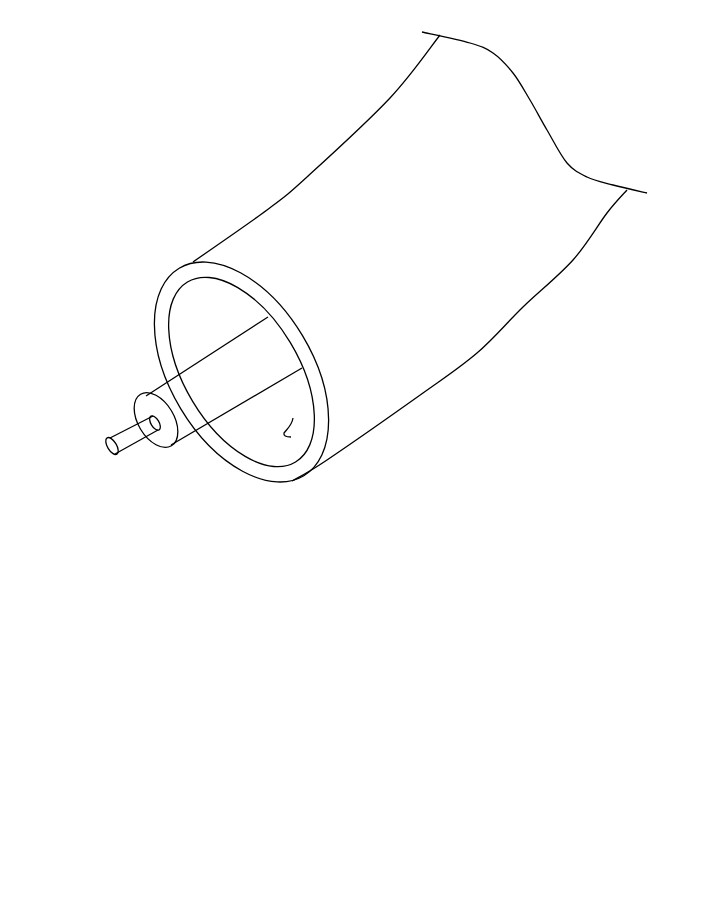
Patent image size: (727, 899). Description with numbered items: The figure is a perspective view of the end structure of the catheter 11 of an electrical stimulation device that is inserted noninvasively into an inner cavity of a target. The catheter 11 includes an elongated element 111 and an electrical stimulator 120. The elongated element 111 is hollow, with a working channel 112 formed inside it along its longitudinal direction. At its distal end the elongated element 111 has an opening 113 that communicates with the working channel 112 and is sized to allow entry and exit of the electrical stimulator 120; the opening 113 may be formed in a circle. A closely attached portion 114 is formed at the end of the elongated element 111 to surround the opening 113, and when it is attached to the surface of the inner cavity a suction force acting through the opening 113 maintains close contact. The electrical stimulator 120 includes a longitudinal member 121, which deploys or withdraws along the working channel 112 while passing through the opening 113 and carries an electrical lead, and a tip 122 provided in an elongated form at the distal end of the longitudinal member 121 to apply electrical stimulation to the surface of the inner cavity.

The catheter 11 is at (250, 150).
The elongated element 111 is at (445, 328).
The working channel 112 is at (295, 437).
The opening 113 is at (254, 455).
The closely attached portion 114 is at (287, 473).
The electrical stimulator 120 is at (122, 382).
The longitudinal member 121 is at (223, 370).
The tip 122 is at (132, 442).